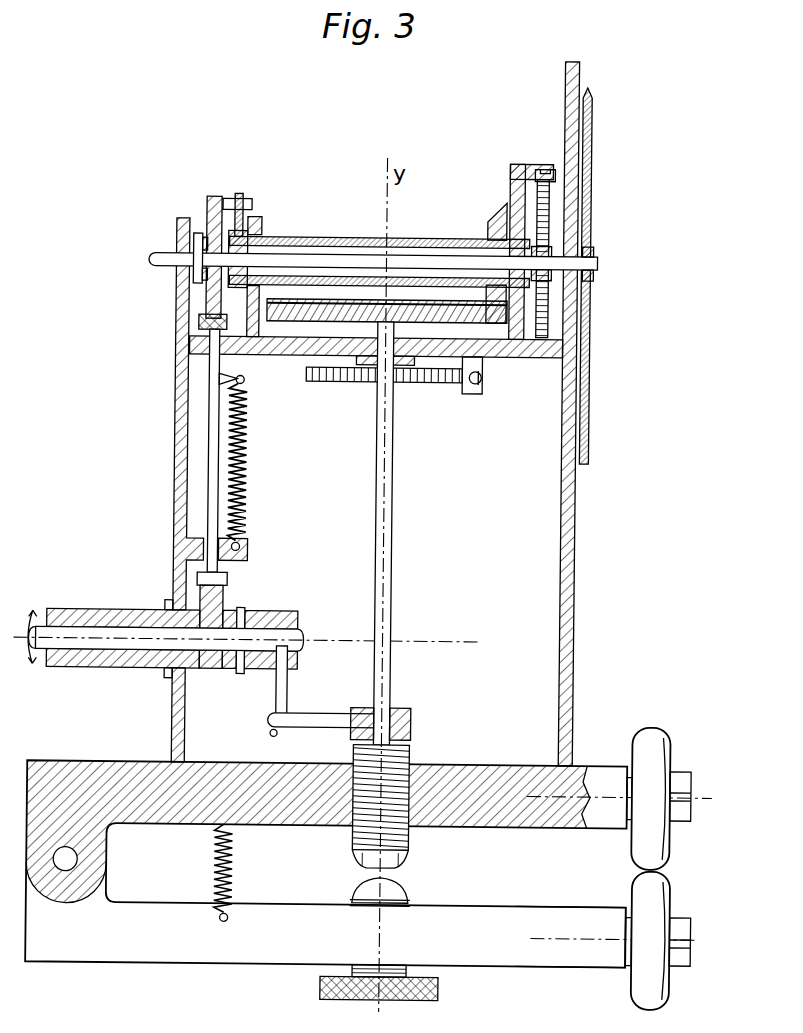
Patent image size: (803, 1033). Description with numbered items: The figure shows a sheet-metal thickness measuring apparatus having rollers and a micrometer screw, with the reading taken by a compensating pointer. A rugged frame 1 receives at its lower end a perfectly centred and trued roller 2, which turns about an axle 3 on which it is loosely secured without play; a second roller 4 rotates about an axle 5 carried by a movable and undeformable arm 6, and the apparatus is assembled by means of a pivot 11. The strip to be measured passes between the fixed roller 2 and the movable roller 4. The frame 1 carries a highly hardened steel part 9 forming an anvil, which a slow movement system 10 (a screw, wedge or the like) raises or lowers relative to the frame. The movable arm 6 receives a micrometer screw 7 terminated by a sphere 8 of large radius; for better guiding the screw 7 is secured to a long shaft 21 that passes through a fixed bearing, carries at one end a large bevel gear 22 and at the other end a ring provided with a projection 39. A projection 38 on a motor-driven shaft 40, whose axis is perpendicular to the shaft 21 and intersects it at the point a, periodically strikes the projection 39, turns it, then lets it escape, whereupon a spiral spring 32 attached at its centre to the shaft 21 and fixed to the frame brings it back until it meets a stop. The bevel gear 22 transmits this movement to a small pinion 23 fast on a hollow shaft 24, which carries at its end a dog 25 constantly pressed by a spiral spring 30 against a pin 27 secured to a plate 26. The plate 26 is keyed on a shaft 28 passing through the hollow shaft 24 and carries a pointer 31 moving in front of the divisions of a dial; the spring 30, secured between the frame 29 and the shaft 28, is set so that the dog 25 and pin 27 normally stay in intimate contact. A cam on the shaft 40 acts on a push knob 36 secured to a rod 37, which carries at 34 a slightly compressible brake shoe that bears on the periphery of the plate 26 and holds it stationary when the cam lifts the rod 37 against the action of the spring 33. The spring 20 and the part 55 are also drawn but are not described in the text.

The frame 1 is at (177, 952).
The roller 2 is at (657, 998).
The axle 3 is at (603, 940).
The second roller 4 is at (658, 852).
The axle 5 is at (613, 798).
The movable arm 6 is at (482, 767).
The micrometer screw 7 is at (407, 755).
The sphere 8 is at (397, 867).
The hardened steel part 9 is at (390, 880).
The slow movement system 10 is at (352, 968).
The pivot 11 is at (65, 868).
The return spring 20 is at (220, 843).
The long shaft 21 is at (382, 530).
The bevel gear 22 is at (318, 323).
The small pinion 23 is at (489, 222).
The hollow shaft 24 is at (318, 241).
The dog 25 is at (241, 222).
The plate 26 is at (206, 200).
The pin 27 is at (228, 203).
The shaft 28 is at (391, 253).
The frame 29 is at (522, 167).
The spiral spring 30 is at (547, 213).
The pointer 31 is at (590, 213).
The spiral spring 32 is at (433, 383).
The spring 33 is at (245, 447).
The brake shoe 34 is at (197, 326).
The push knob 36 is at (220, 578).
The rod 37 is at (212, 473).
The projection 38 is at (282, 677).
The projection 39 is at (303, 720).
The shaft 40 is at (43, 645).
The hub 55 is at (218, 602).
The point a is at (385, 643).